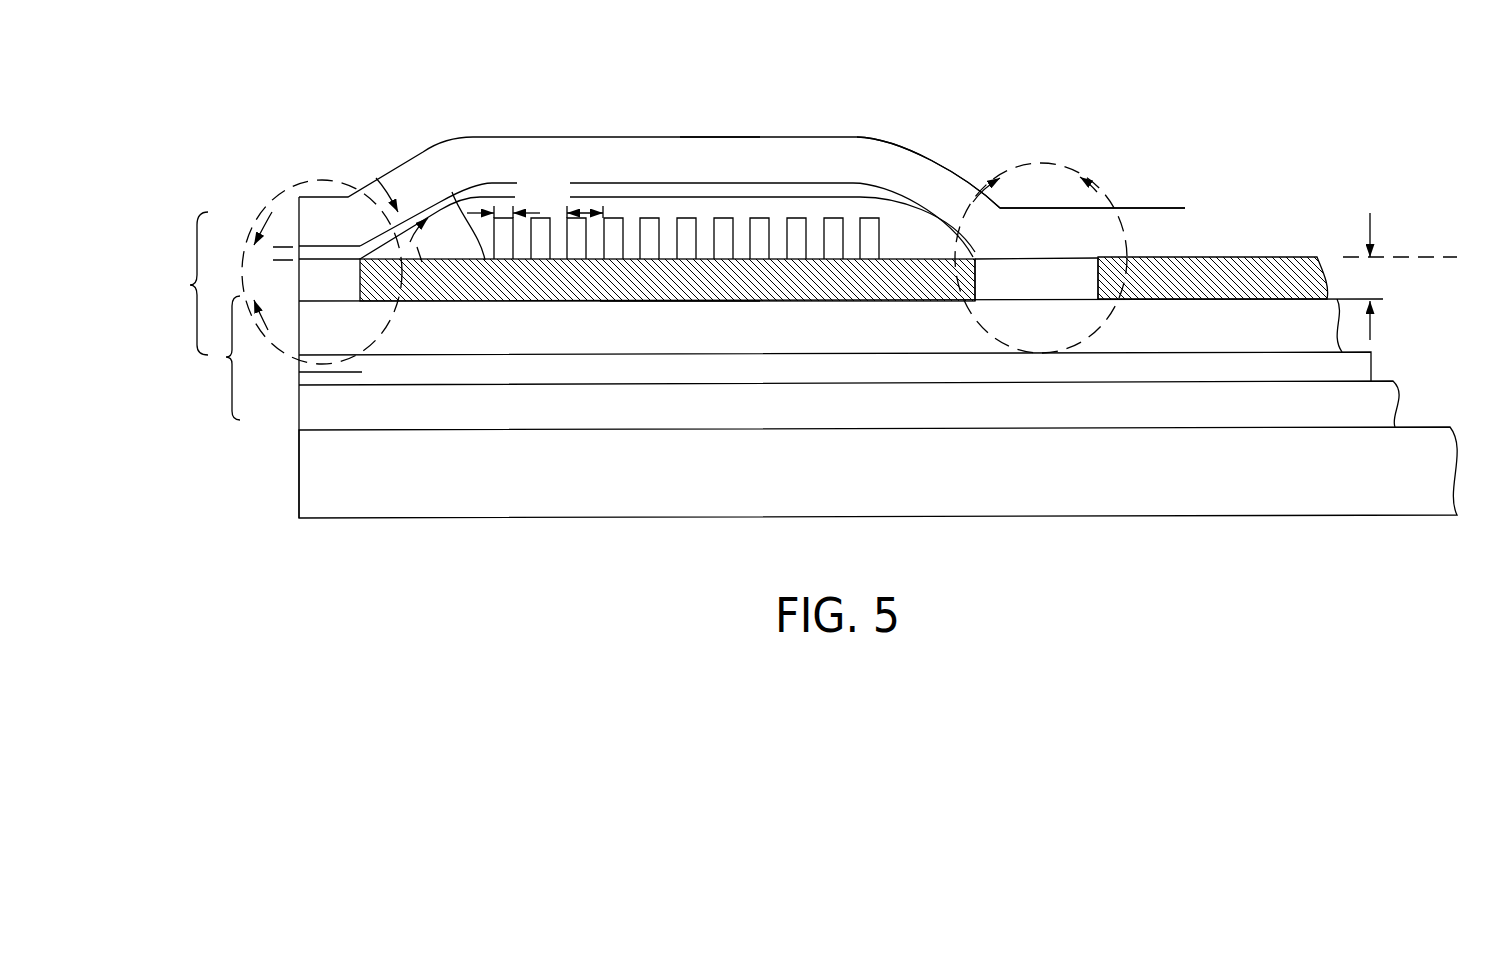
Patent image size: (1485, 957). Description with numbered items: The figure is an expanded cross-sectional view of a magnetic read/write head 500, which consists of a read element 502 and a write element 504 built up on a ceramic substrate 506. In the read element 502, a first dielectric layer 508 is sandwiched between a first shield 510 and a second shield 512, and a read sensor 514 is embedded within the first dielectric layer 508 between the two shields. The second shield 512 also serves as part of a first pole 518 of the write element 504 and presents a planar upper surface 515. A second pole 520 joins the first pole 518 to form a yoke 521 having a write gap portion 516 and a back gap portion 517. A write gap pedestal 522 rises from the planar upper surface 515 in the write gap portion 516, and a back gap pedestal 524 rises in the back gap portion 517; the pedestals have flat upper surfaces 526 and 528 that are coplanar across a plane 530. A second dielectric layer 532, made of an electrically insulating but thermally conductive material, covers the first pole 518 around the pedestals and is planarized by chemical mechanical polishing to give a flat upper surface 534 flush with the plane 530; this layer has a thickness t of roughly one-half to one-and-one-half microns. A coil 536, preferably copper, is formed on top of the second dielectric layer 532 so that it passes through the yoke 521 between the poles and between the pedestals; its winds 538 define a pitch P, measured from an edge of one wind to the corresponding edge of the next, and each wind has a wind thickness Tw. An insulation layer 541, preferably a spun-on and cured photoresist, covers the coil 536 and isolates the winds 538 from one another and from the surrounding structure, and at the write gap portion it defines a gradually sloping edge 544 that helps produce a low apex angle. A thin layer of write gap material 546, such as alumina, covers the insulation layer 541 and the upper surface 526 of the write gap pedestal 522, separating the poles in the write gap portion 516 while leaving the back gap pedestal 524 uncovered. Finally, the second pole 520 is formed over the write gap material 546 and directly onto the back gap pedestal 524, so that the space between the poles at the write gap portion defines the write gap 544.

The magnetic read/write head 500 is at (860, 87).
The read element 502 is at (226, 357).
The write element 504 is at (179, 283).
The ceramic substrate 506 is at (573, 503).
The first dielectric layer 508 is at (487, 370).
The first shield 510 is at (573, 418).
The second shield 512 is at (538, 333).
The read sensor 514 is at (350, 372).
The planar upper surface 515 is at (563, 301).
The write gap portion 516 is at (666, 357).
The back gap portion 517 is at (1041, 258).
The first pole 518 is at (665, 324).
The second pole 520 is at (555, 136).
The yoke 521 is at (705, 130).
The write gap pedestal 522 is at (315, 273).
The back gap pedestal 524 is at (1057, 253).
The upper surface of write gap pedestal 526 is at (297, 203).
The upper surface of back gap pedestal 528 is at (1083, 277).
The plane 530 is at (1400, 247).
The second dielectric layer 532 is at (445, 256).
The upper surface of second dielectric layer 534 is at (467, 260).
The coil 536 is at (690, 214).
The winds 538 is at (795, 218).
The insulation layer 541 is at (890, 227).
The gradually sloping edge 544 is at (376, 178).
The write gap material layer 546 is at (658, 185).
The thickness t is at (1372, 320).
The pitch P is at (587, 213).
The wind thickness Tw is at (497, 216).